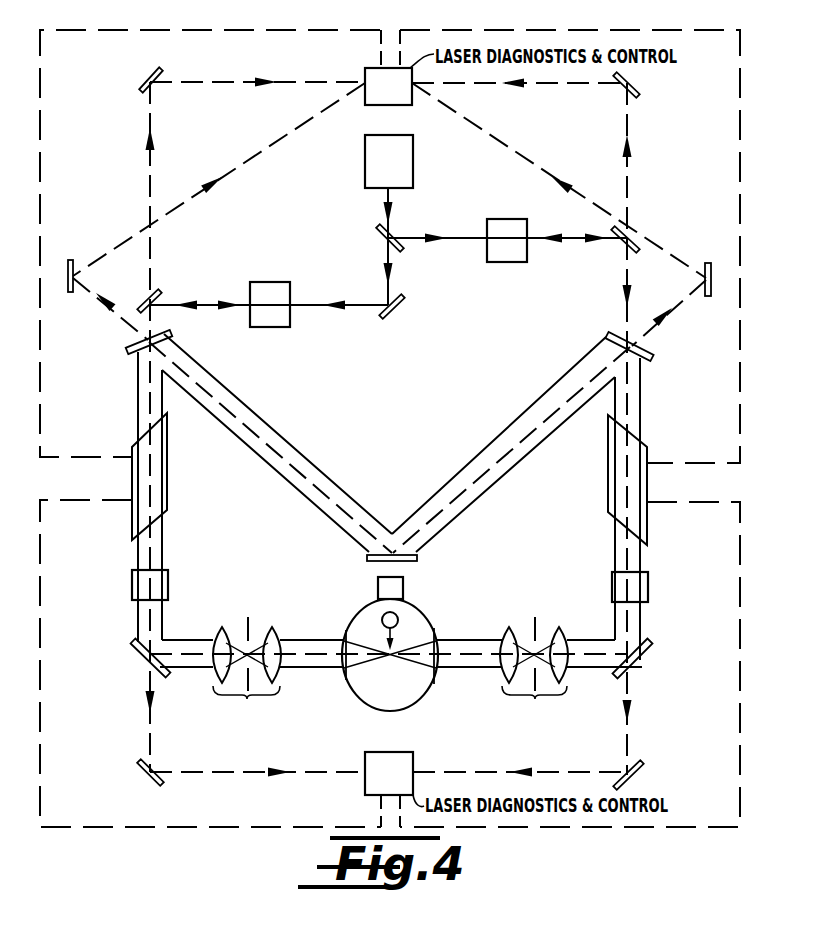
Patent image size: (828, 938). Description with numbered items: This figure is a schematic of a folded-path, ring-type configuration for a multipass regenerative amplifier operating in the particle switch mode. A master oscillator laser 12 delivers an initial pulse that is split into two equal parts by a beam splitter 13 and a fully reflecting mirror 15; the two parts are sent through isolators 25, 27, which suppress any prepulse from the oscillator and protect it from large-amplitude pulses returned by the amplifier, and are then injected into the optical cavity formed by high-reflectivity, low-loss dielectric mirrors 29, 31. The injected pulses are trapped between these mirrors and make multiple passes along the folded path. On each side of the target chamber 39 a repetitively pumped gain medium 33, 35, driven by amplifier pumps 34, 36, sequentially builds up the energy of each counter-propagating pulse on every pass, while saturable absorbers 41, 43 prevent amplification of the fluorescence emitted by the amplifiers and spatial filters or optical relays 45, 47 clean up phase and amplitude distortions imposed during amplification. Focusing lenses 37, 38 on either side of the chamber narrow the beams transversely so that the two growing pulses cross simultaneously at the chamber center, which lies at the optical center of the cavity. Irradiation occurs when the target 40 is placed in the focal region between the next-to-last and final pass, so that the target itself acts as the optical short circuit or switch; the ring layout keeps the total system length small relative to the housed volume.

The master oscillator laser 12 is at (413, 165).
The beam splitter 13 is at (377, 229).
The fully reflecting mirror 15 is at (386, 317).
The isolator 25 is at (510, 262).
The isolator 27 is at (277, 327).
The cavity mirror 29 is at (126, 348).
The cavity mirror 31 is at (655, 350).
The amplifier gain medium 33 is at (197, 476).
The amplifier pump 34 is at (155, 476).
The amplifier gain medium 35 is at (584, 480).
The amplifier pump 36 is at (620, 470).
The focusing lens 37 is at (347, 672).
The focusing lens 38 is at (436, 688).
The target chamber 39 is at (403, 588).
The target 40 is at (381, 617).
The saturable absorber 41 is at (168, 583).
The saturable absorber 43 is at (648, 576).
The spatial filter/optical relay 45 is at (247, 699).
The spatial filter/optical relay 47 is at (535, 699).